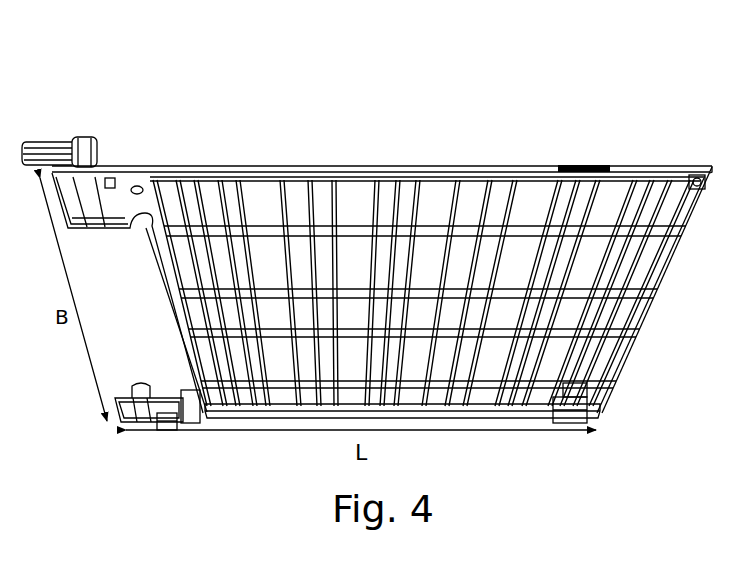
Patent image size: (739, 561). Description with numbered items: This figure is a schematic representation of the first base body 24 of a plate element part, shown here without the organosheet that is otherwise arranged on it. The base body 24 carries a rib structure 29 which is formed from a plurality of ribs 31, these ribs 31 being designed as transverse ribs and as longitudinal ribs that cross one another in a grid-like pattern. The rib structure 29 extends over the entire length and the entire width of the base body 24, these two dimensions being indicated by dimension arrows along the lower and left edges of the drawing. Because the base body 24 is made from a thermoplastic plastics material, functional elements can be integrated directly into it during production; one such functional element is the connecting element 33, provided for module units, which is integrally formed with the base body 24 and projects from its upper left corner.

The first base body 24 is at (590, 150).
The rib structure 29 is at (573, 315).
The ribs 31 is at (440, 218).
The connecting element 33 is at (53, 141).